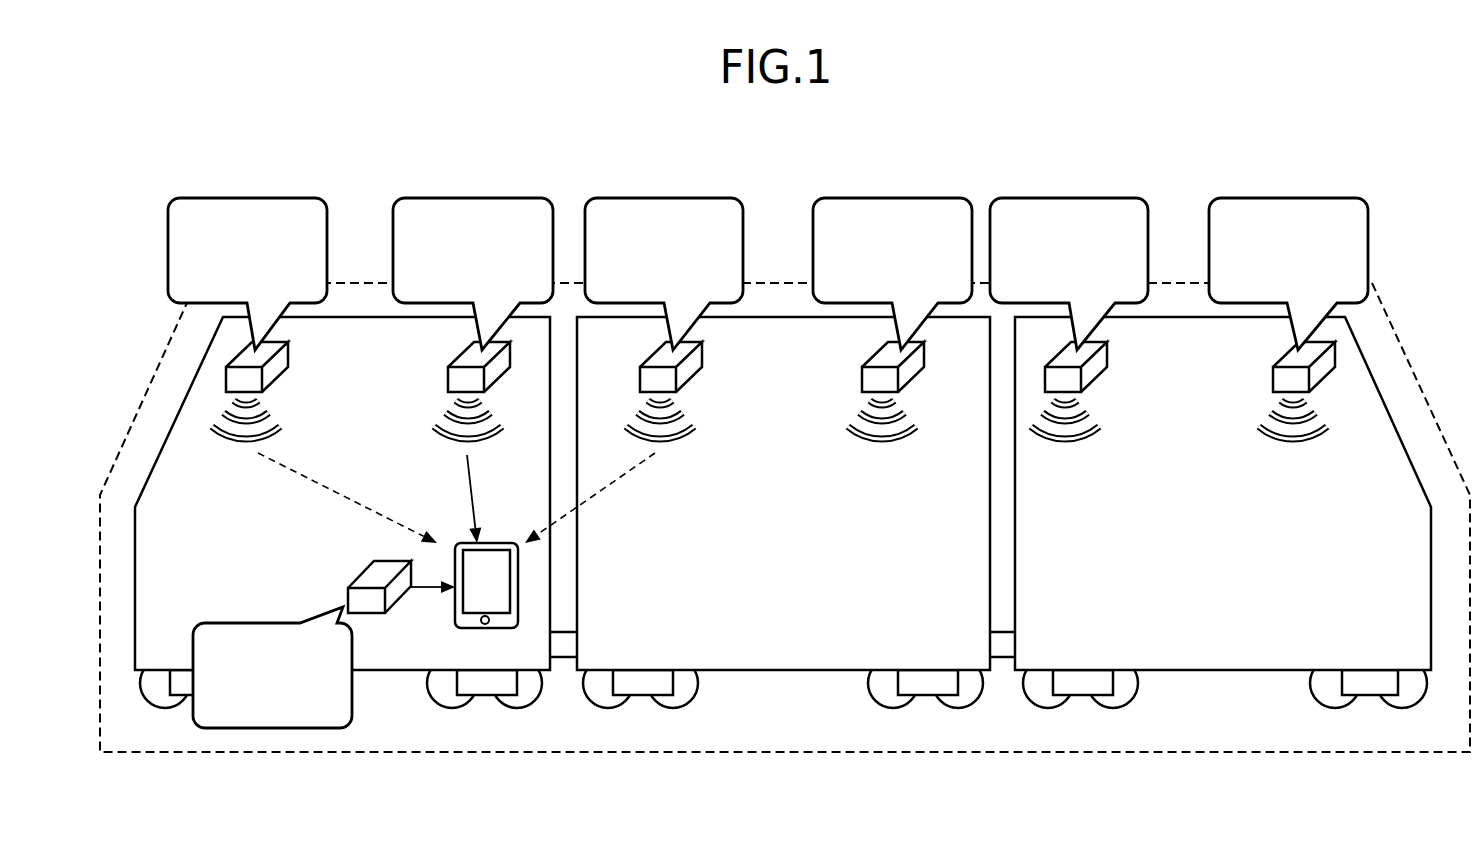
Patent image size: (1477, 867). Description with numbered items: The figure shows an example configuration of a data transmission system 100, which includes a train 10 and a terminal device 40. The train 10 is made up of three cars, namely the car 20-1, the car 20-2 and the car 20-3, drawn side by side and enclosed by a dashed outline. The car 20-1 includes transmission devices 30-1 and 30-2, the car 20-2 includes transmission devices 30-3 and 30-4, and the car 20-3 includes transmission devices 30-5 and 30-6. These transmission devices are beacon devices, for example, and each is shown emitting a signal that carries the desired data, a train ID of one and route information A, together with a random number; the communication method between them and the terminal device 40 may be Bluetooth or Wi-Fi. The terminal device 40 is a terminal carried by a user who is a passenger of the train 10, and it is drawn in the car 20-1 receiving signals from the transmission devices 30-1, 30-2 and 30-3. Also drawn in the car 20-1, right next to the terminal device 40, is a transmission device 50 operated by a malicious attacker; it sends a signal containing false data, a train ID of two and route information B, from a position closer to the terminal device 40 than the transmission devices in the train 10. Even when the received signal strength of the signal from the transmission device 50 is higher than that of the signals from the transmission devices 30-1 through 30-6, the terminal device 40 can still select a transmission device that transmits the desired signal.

The data transmission system 100 is at (773, 179).
The train 10 is at (1408, 363).
The car 20-1 is at (204, 355).
The car 20-2 is at (770, 317).
The car 20-3 is at (1357, 340).
The transmission device 30-1 is at (290, 350).
The transmission device 30-2 is at (448, 385).
The transmission device 30-3 is at (704, 350).
The transmission device 30-4 is at (862, 386).
The transmission device 30-5 is at (1108, 353).
The transmission device 30-6 is at (1273, 384).
The terminal device 40 is at (500, 543).
The transmission device 50 is at (358, 578).